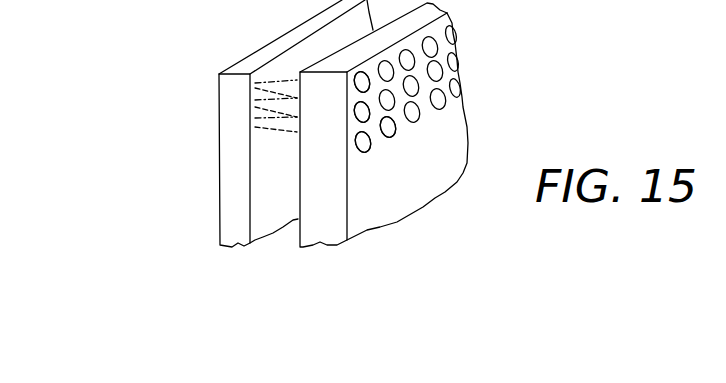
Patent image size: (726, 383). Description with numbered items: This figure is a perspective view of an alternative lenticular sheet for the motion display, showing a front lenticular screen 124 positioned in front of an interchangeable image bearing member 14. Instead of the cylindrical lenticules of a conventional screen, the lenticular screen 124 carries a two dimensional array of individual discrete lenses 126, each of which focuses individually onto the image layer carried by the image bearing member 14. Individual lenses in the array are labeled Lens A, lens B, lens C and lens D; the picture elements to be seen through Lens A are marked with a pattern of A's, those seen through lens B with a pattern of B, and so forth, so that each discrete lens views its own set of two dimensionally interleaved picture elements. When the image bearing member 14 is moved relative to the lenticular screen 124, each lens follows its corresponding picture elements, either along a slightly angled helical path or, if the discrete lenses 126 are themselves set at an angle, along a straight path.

The image bearing member 14 is at (230, 152).
The front lenticular screen 124 is at (423, 141).
The discrete lenses 126 is at (365, 153).
The Lens A is at (372, 143).
The lens B is at (396, 127).
The aperture C is at (352, 114).
The aperture D is at (357, 87).